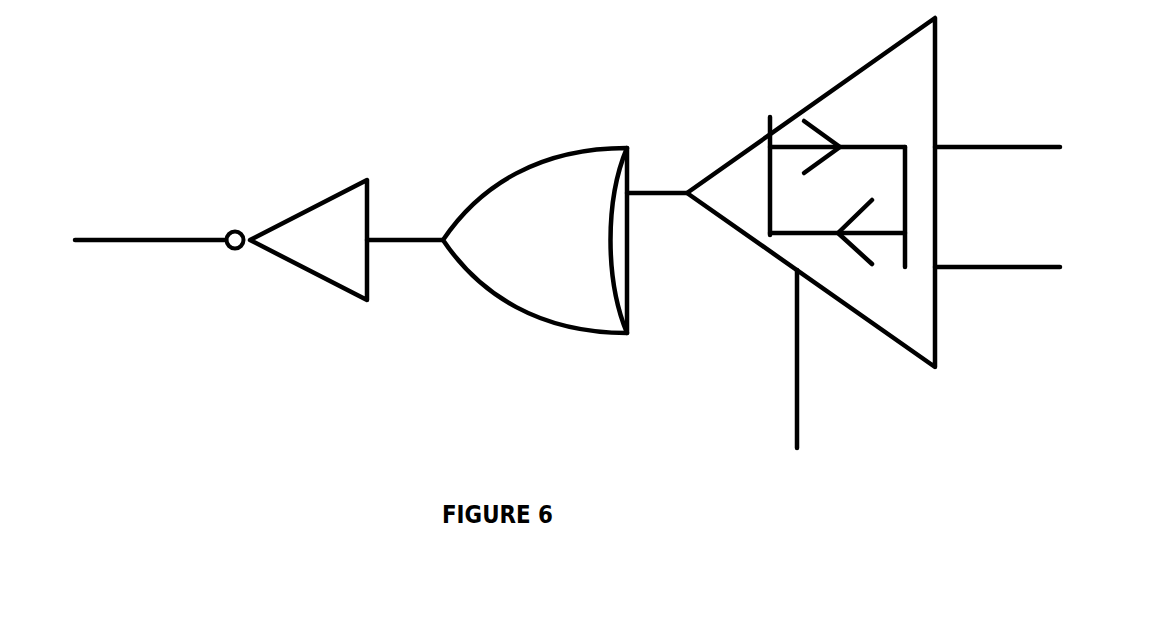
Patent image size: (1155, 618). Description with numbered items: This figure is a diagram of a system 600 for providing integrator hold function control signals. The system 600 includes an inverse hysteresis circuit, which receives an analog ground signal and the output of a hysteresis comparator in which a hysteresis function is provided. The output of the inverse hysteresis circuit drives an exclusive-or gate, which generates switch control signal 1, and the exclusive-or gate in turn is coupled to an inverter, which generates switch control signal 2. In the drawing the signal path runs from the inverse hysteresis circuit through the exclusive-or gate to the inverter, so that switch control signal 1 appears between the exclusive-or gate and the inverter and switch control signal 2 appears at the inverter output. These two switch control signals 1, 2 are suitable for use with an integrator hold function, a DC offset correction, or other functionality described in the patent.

The switch control signal 1 is at (405, 201).
The switch control signal 2 is at (150, 209).
The system 600 is at (612, 280).